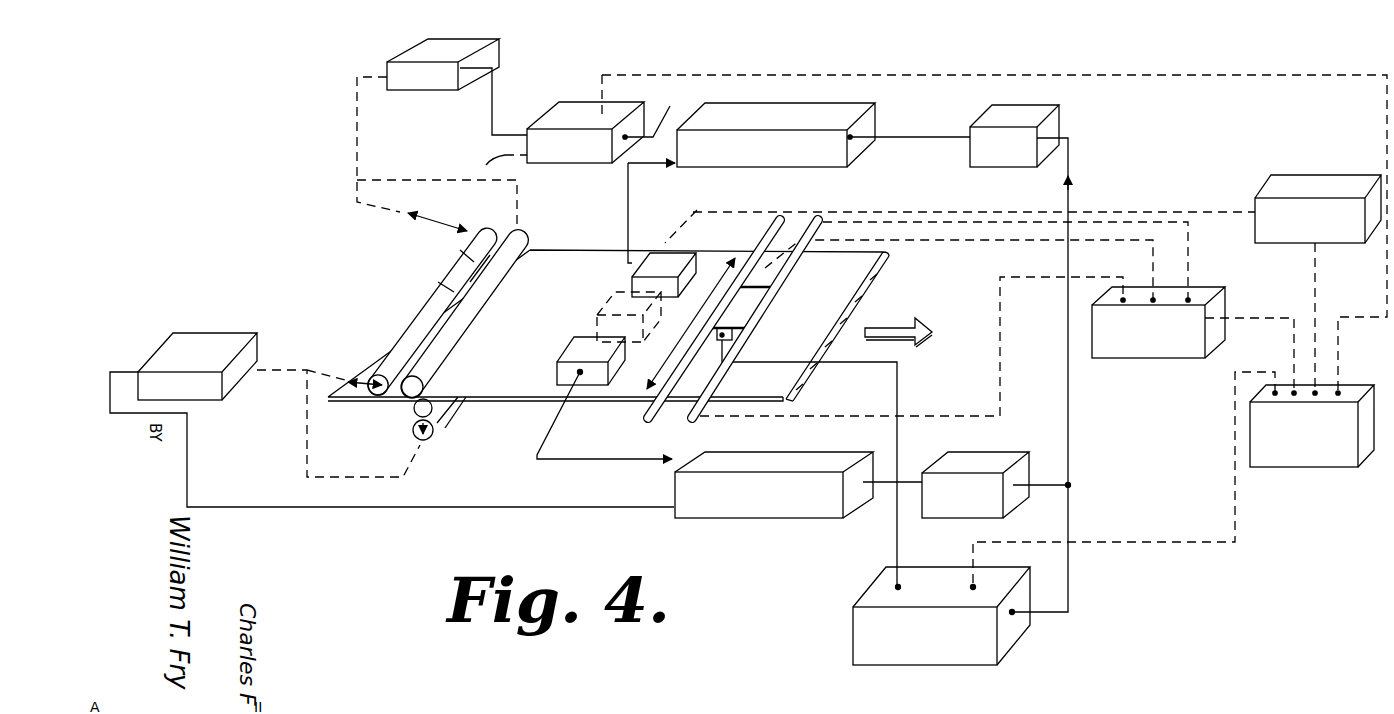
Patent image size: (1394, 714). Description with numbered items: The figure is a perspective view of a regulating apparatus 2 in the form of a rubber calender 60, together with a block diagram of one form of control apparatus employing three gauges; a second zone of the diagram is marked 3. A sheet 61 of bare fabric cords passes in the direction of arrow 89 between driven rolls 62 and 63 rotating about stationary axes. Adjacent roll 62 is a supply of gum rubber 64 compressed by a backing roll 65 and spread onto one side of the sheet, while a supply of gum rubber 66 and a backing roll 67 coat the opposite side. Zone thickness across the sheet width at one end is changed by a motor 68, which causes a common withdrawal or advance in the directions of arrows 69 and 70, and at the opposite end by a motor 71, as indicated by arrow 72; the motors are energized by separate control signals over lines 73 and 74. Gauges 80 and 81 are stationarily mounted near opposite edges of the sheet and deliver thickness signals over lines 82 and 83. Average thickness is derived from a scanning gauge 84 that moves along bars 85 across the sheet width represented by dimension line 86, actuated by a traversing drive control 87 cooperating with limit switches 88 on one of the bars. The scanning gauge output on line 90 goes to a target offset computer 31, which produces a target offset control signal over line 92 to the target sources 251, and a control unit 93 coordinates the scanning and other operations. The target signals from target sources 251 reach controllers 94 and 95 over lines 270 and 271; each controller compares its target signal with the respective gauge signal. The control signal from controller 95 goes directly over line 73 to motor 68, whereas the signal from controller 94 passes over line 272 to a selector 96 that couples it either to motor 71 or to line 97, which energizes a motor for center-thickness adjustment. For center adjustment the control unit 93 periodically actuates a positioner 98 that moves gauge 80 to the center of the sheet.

The regulating apparatus 2 is at (332, 144).
The second station 3 is at (1170, 167).
The target offset computer 31 is at (1005, 638).
The rubber calender 60 is at (424, 318).
The sheet 61 is at (882, 263).
The driven roll 62 is at (455, 337).
The driven roll 63 is at (414, 409).
The supply of gum rubber 64 is at (440, 283).
The backing roll 65 is at (462, 258).
The supply of gum rubber 66 is at (447, 420).
The backing roll 67 is at (431, 441).
The motor 68 is at (189, 342).
The arrow 69 is at (358, 377).
The arrow 70 is at (432, 438).
The motor 71 is at (467, 30).
The arrow 72 is at (453, 200).
The line 73 is at (187, 468).
The line 74 is at (493, 97).
The gauge 80 is at (632, 270).
The gauge 81 is at (575, 340).
The line 82 is at (628, 220).
The line 83 is at (604, 415).
The scanning gauge 84 is at (757, 308).
The bars 85 is at (650, 420).
The dimension line 86 is at (674, 350).
The traversing drive control 87 is at (1190, 356).
The limit switches 88 is at (700, 418).
The arrow 89 is at (933, 324).
The line 90 is at (897, 440).
The line 92 is at (1068, 510).
The control unit 93 is at (1307, 464).
The controller 94 is at (827, 103).
The controller 95 is at (803, 512).
The selector 96 is at (588, 86).
The line 97 is at (490, 166).
The positioner 98 is at (1347, 165).
The target sources 251 is at (1058, 110).
The line 270 is at (917, 138).
The line 271 is at (912, 485).
The line 272 is at (672, 112).